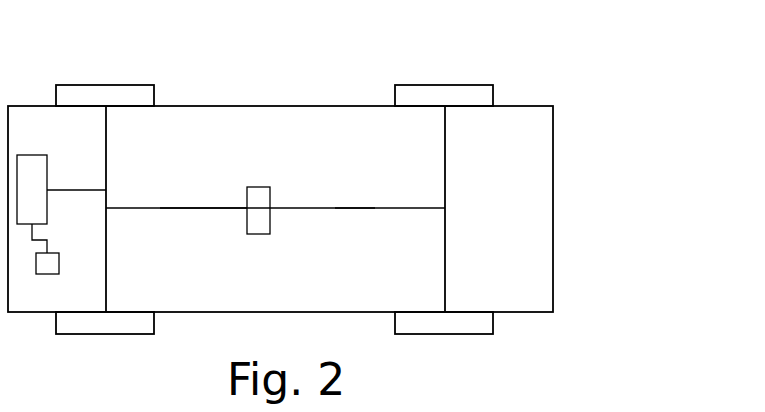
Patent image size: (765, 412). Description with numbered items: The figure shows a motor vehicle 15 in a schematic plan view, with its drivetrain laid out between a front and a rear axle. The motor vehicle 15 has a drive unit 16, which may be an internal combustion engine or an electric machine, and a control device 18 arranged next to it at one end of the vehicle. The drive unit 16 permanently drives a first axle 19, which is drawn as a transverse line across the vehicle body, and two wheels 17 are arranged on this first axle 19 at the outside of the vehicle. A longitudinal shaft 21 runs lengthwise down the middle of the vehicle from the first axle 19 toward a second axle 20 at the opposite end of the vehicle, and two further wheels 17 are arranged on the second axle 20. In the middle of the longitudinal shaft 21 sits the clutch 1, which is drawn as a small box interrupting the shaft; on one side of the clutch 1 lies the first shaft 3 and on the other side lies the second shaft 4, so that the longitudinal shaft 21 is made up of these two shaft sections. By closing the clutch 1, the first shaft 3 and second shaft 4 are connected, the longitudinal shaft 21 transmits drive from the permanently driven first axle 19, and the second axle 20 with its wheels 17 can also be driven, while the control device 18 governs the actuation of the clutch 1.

The clutch 1 is at (257, 188).
The first shaft 3 is at (204, 207).
The second shaft 4 is at (312, 210).
The motor vehicle 15 is at (567, 80).
The drive unit 16 is at (36, 156).
The wheel 17 is at (106, 92).
The control device 18 is at (53, 253).
The first axle 19 is at (107, 147).
The second axle 20 is at (446, 163).
The longitudinal shaft 21 is at (170, 207).